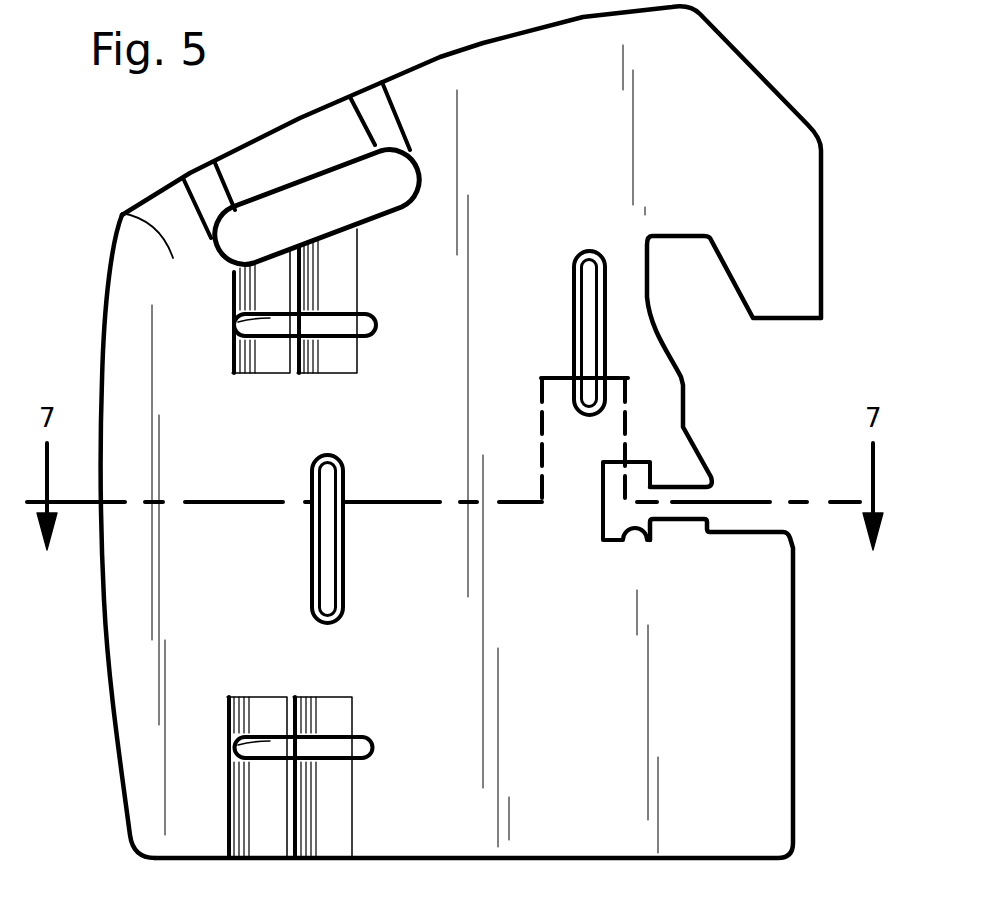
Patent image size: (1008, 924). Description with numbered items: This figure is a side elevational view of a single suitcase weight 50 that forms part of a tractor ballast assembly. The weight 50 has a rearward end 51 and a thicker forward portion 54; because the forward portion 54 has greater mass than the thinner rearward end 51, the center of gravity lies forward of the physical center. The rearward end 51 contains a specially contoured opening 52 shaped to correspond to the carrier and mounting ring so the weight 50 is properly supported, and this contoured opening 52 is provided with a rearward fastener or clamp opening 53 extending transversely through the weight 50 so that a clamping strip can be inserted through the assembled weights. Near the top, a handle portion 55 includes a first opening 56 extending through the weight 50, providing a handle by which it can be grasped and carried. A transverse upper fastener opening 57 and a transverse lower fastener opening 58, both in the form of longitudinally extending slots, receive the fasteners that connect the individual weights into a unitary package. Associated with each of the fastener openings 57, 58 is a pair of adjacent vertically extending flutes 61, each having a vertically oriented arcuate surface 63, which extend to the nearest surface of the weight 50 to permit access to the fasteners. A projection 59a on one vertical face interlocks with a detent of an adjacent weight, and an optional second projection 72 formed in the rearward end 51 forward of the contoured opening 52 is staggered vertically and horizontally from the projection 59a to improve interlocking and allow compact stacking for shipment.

The suitcase weight 50 is at (740, 53).
The rearward end 51 is at (755, 837).
The contoured opening 52 is at (709, 326).
The rearward fastener opening 53 is at (650, 541).
The forward portion 54 is at (122, 213).
The handle portion 55 is at (287, 147).
The first opening 56 is at (310, 182).
The upper fastener opening 57 is at (233, 327).
The lower fastener opening 58 is at (230, 745).
The projection 59a is at (325, 565).
The flutes 61 is at (272, 360).
The arcuate surface 63 is at (333, 296).
The second projection 72 is at (585, 308).